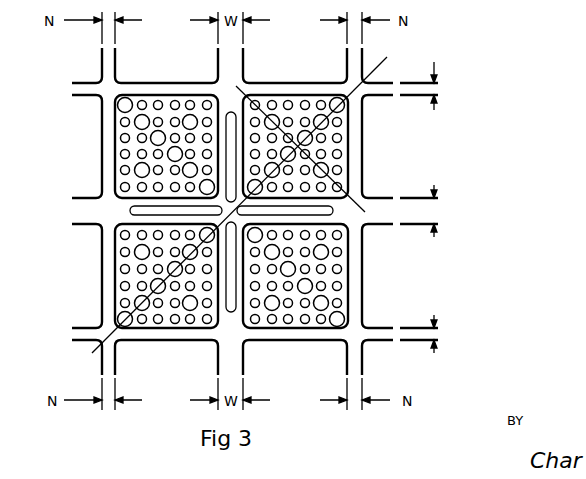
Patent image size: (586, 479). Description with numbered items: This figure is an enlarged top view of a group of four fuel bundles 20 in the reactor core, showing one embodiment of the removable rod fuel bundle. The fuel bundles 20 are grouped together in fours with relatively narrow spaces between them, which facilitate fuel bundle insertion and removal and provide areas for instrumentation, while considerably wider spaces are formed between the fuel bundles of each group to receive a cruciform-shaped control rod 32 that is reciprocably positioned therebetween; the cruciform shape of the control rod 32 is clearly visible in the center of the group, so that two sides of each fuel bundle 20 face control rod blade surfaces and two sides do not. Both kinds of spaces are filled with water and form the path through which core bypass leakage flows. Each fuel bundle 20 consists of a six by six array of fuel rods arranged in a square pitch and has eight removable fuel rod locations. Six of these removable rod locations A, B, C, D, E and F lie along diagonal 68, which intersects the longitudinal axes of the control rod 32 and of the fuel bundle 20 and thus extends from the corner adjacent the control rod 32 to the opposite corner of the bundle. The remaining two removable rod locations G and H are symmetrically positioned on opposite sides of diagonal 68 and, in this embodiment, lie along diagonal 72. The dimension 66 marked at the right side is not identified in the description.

The fuel bundle 20 is at (143, 95).
The control rod 32 is at (226, 322).
The gap spacing between modules 66 is at (437, 89).
The diagonal 68 is at (348, 93).
The diagonal 72 is at (365, 212).
The removable rod location A is at (205, 188).
The removable rod location B is at (190, 170).
The removable rod location C is at (175, 154).
The removable rod location D is at (158, 138).
The removable rod location E is at (142, 122).
The removable rod location F is at (122, 105).
The removable rod location G is at (142, 170).
The removable rod location H is at (190, 122).